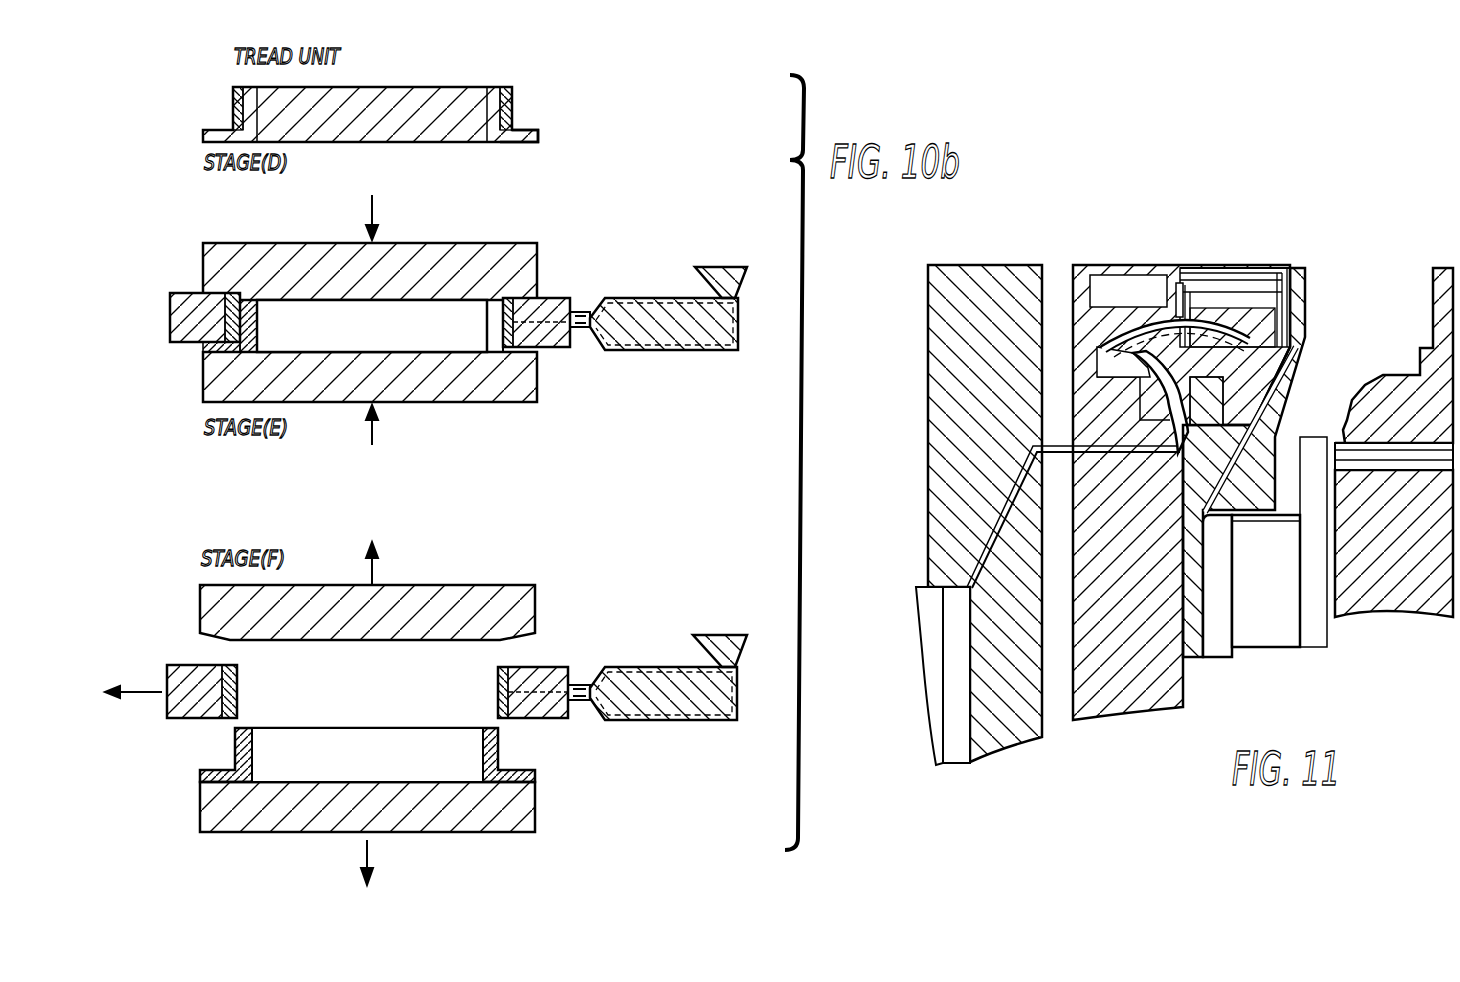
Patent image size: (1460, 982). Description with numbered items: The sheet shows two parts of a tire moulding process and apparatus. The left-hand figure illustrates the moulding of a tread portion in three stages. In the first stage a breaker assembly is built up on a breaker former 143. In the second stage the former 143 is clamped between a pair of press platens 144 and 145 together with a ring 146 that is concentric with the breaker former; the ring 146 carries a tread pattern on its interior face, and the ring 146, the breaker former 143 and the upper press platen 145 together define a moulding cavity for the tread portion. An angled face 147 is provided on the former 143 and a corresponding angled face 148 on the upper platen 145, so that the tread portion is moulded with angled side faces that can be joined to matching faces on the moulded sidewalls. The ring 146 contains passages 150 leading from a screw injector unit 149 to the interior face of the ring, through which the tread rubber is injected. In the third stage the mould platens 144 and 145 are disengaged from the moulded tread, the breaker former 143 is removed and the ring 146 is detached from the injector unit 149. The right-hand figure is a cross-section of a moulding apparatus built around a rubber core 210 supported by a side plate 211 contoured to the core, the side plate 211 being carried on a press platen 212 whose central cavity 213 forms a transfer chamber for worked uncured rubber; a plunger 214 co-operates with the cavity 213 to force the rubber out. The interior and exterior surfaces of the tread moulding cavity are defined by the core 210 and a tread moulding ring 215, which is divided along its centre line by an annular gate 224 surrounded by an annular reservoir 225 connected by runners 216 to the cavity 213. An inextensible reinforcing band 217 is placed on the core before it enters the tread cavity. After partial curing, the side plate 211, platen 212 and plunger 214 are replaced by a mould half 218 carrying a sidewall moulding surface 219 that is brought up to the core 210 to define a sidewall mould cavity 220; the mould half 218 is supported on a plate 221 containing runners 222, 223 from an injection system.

In FIG. 10B, the breaker former 143 is at (238, 117).
In FIG. 10B, the press platen 144 is at (222, 372).
In FIG. 10B, the upper press platen 145 is at (232, 262).
In FIG. 10B, the ring 146 is at (185, 300).
In FIG. 10B, the angled face 147 is at (508, 126).
In FIG. 10B, the angled face 148 is at (510, 300).
In FIG. 10B, the screw injector unit 149 is at (660, 300).
In FIG. 10B, the passages 150 is at (578, 335).
In FIG. 11, the rubber core 210 is at (1175, 386).
In FIG. 11, the side plate 211 is at (1222, 386).
In FIG. 11, the press platen 212 is at (1283, 400).
In FIG. 11, the cavity 213 is at (1214, 655).
In FIG. 11, the plunger 214 is at (1268, 647).
In FIG. 11, the tread moulding ring 215 is at (1255, 310).
In FIG. 11, the runners 216 is at (1285, 345).
In FIG. 11, the inextensible reinforcing band 217 is at (1225, 330).
In FIG. 11, the mould half 218 is at (1143, 424).
In FIG. 11, the sidewall moulding surface 219 is at (1140, 402).
In FIG. 11, the sidewall mould cavity 220 is at (1135, 372).
In FIG. 11, the plate 221 is at (1143, 700).
In FIG. 11, the runner 222 is at (1030, 449).
In FIG. 11, the runner 223 is at (1185, 440).
In FIG. 11, the annular gate 224 is at (1178, 312).
In FIG. 11, the annular reservoir 225 is at (1179, 288).